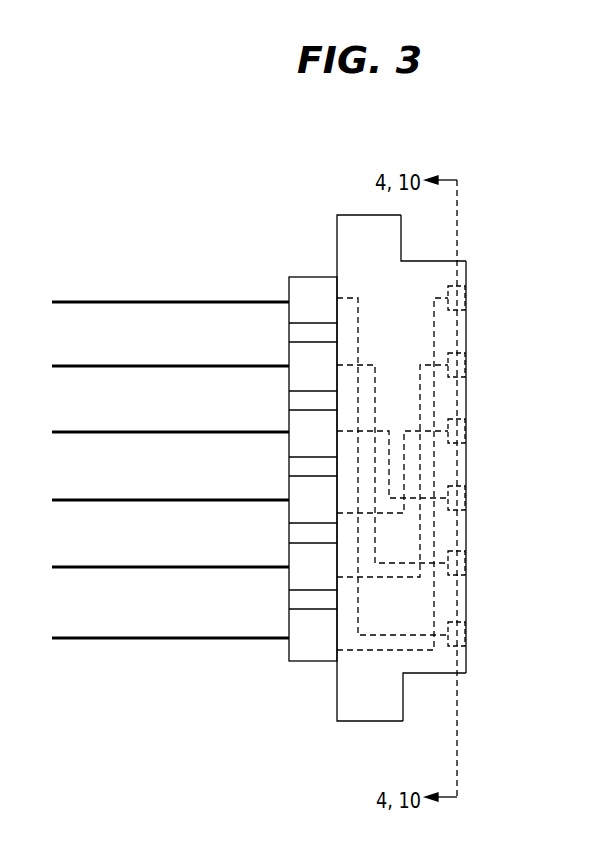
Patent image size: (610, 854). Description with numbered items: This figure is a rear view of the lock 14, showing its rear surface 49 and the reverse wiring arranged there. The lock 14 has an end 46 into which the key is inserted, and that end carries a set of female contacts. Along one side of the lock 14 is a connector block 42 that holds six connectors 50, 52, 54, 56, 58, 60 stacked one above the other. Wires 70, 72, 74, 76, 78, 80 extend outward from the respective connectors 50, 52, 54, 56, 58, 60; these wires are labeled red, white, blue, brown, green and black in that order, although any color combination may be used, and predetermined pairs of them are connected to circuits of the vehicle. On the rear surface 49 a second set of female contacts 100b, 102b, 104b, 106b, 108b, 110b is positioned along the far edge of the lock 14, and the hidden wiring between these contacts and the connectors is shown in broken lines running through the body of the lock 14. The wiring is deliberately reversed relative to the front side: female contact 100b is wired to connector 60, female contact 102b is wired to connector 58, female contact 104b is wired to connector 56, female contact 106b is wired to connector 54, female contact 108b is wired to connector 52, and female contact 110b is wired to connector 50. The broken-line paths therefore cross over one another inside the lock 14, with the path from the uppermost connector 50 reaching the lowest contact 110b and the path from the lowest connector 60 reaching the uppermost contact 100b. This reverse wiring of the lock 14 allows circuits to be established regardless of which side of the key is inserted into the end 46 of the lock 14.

The lock 14 is at (345, 215).
The connector block 42 is at (325, 277).
The end 46 is at (467, 273).
The rear surface 49 is at (423, 273).
The connector 50 is at (308, 292).
The connector 52 is at (328, 376).
The connector 54 is at (328, 444).
The connector 56 is at (305, 507).
The connector 58 is at (320, 577).
The connector 60 is at (318, 643).
The wire 70 is at (250, 447).
The wire 72 is at (250, 443).
The wire 74 is at (250, 444).
The wire 76 is at (250, 472).
The wire 78 is at (250, 471).
The wire 80 is at (250, 474).
The female contact 100b is at (467, 303).
The female contact 102b is at (467, 370).
The female contact 104b is at (467, 436).
The female contact 106b is at (467, 503).
The female contact 108b is at (467, 568).
The female contact 110b is at (467, 640).